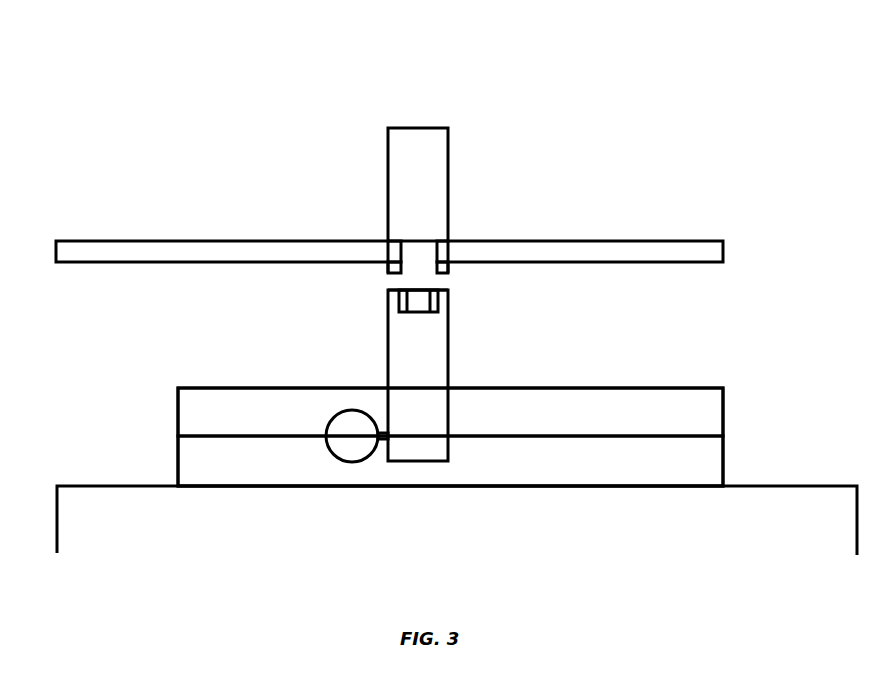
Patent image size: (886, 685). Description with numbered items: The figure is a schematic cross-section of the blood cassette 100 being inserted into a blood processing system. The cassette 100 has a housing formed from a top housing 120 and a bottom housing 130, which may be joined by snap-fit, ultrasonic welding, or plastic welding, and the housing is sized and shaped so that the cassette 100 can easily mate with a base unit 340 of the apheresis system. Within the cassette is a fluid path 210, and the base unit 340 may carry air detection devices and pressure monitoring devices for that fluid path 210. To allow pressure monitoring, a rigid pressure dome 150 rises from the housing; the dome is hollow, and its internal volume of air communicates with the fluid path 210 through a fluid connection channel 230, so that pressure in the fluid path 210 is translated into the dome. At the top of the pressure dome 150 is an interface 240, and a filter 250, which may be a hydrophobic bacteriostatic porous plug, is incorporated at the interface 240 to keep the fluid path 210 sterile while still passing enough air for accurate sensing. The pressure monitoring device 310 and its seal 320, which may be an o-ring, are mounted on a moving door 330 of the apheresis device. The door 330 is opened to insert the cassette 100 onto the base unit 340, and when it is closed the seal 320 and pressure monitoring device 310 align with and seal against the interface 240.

The blood cassette 100 is at (178, 410).
The top housing 120 is at (725, 410).
The bottom housing 130 is at (725, 458).
The pressure dome 150 is at (388, 344).
The fluid path 210 is at (345, 447).
The fluid connection channel 230 is at (383, 441).
The interface 240 is at (388, 292).
The filter 250 is at (412, 312).
The pressure monitoring device 310 is at (450, 138).
The seal 320 is at (448, 273).
The moving door 330 is at (675, 255).
The base unit 340 is at (793, 515).